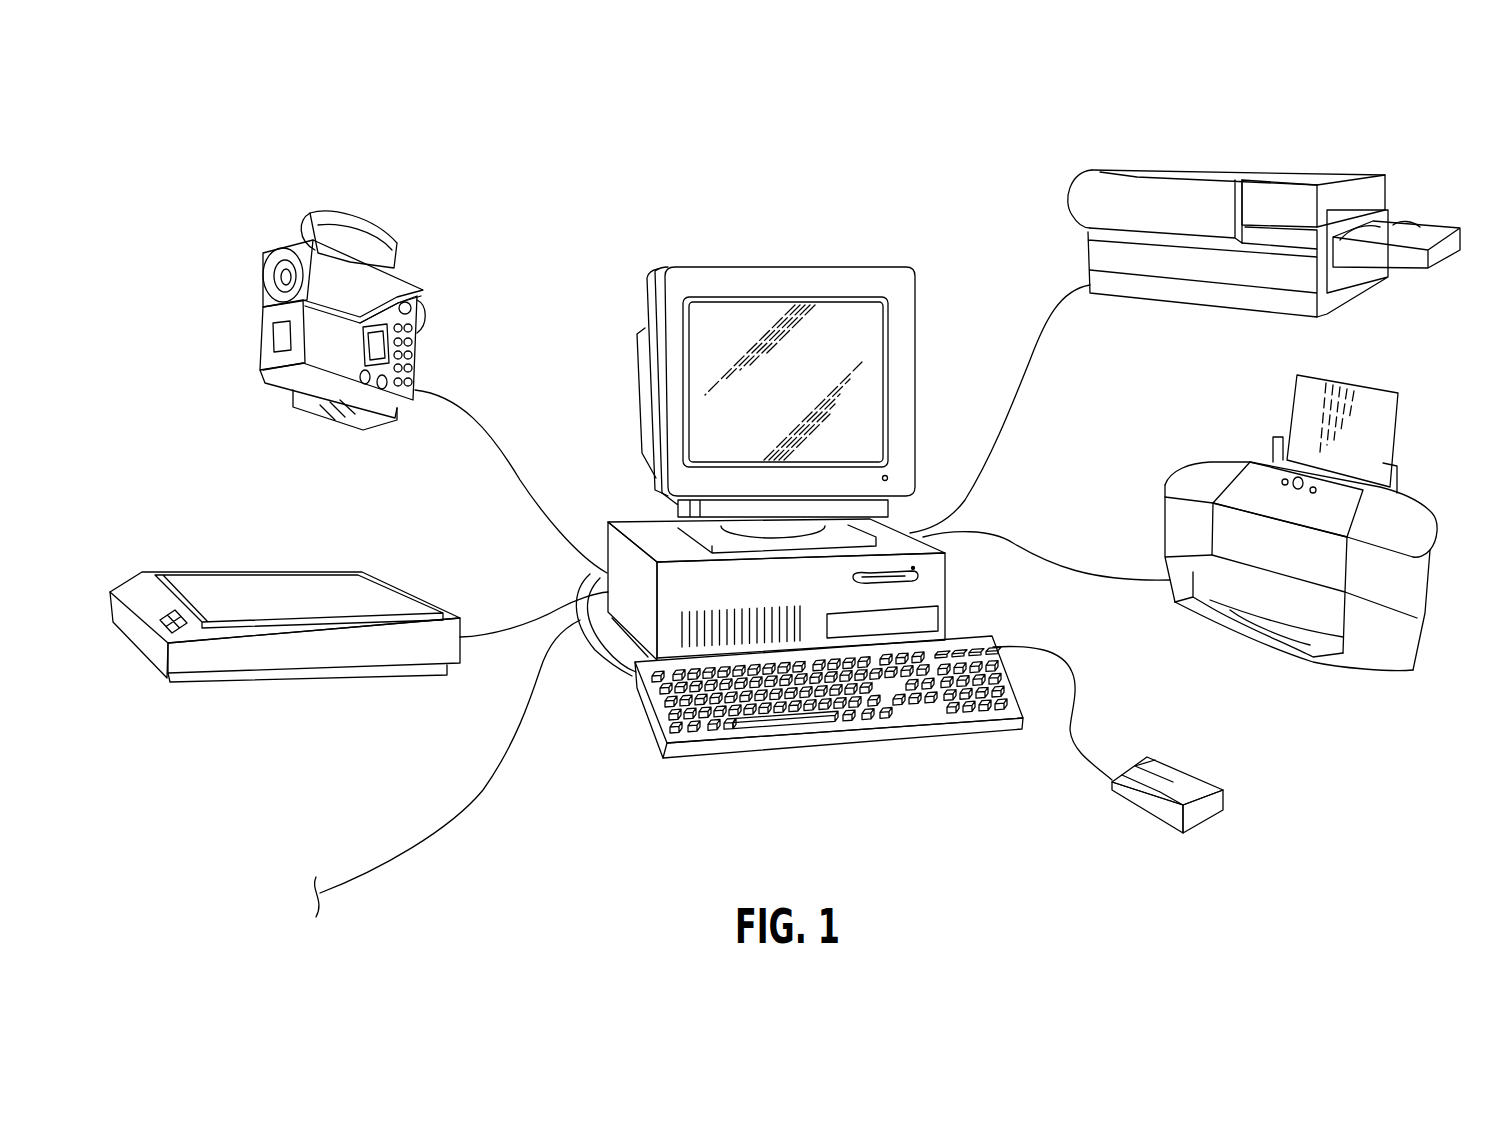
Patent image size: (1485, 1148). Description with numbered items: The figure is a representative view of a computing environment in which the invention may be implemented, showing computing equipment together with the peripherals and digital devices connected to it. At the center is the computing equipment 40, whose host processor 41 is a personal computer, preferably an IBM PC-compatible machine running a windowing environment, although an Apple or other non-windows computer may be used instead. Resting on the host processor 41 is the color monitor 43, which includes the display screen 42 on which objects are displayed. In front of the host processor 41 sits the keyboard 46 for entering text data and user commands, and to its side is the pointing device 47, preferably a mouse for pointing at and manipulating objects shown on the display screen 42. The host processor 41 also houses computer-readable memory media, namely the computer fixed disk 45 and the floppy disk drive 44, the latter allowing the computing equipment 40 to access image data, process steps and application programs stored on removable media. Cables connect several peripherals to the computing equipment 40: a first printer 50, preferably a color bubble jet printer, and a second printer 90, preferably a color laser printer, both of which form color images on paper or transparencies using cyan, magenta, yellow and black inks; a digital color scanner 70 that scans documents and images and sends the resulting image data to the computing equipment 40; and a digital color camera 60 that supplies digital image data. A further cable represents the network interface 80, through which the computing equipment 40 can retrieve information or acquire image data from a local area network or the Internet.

The computing equipment 40 is at (889, 228).
The host processor 41 is at (628, 520).
The display screen 42 is at (867, 347).
The color monitor 43 is at (779, 266).
The floppy disk drive 44 is at (942, 578).
The computer fixed disk 45 is at (940, 612).
The keyboard 46 is at (755, 735).
The pointing device 47 is at (1200, 818).
The printer 50 is at (1248, 447).
The digital color camera 60 is at (416, 298).
The digital color scanner 70 is at (338, 673).
The network interface 80 is at (415, 924).
The printer 90 is at (1150, 160).